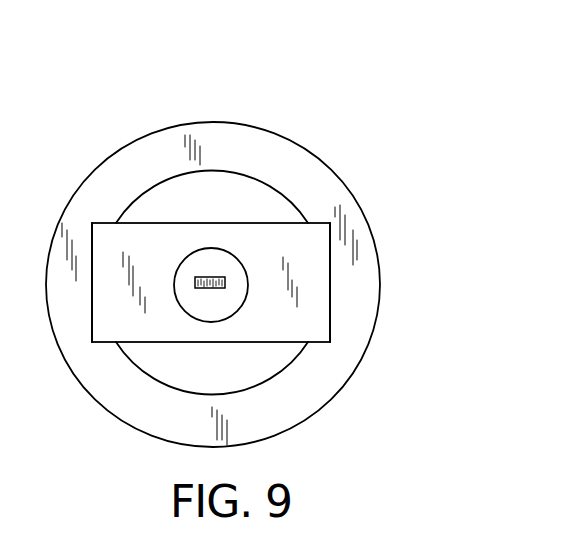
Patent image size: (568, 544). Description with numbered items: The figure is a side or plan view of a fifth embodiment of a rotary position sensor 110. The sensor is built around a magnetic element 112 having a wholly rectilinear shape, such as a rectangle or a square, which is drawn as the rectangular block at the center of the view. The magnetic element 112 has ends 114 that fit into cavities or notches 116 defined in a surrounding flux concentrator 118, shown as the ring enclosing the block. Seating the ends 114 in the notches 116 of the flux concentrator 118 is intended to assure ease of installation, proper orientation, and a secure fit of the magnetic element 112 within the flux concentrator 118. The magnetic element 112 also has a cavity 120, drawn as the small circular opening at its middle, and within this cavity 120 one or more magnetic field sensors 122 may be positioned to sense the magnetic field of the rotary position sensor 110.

The rotary position sensor 110 is at (313, 128).
The magnetic element 112 is at (286, 240).
The ends 114 is at (330, 287).
The cavities or notches 116 is at (322, 342).
The flux concentrator 118 is at (303, 418).
The cavity 120 is at (198, 250).
The magnetic field sensor 122 is at (212, 277).